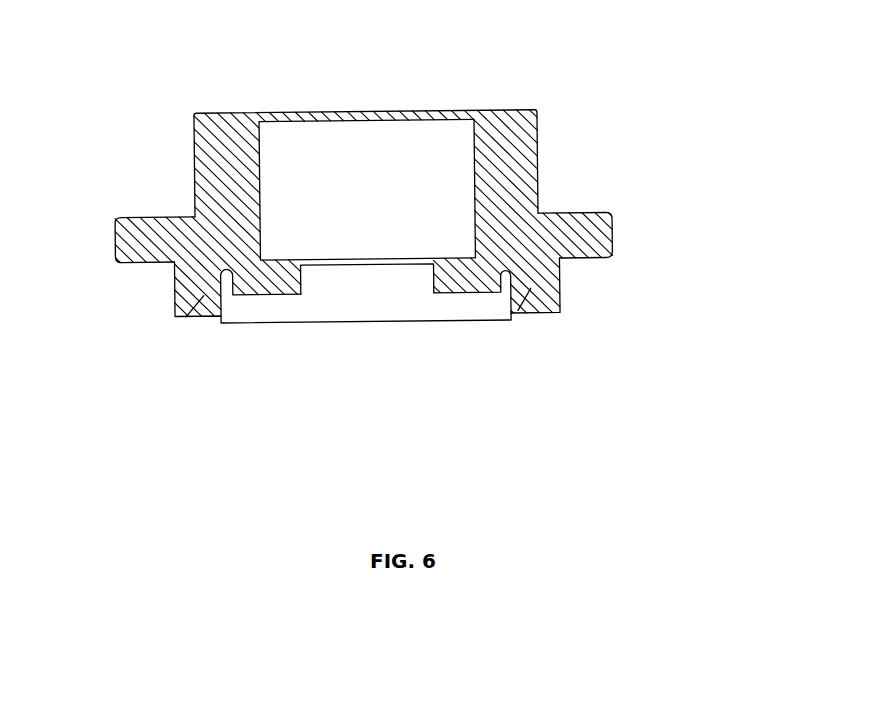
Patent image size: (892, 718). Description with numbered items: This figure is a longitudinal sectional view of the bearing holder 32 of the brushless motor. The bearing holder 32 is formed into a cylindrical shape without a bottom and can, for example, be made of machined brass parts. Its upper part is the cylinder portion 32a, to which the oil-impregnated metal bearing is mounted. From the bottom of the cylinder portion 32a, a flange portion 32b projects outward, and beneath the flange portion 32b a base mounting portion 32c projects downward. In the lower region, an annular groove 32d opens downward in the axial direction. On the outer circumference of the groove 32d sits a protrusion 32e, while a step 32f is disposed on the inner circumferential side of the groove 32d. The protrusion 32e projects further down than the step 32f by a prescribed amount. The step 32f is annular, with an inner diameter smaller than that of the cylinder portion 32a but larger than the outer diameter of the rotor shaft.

The bearing holder 32 is at (167, 123).
The cylinder portion 32a is at (542, 123).
The flange portion 32b is at (613, 228).
The base mounting portion 32c is at (562, 282).
The annular groove 32d is at (225, 284).
The protrusion 32e is at (517, 312).
The step 32f is at (298, 278).